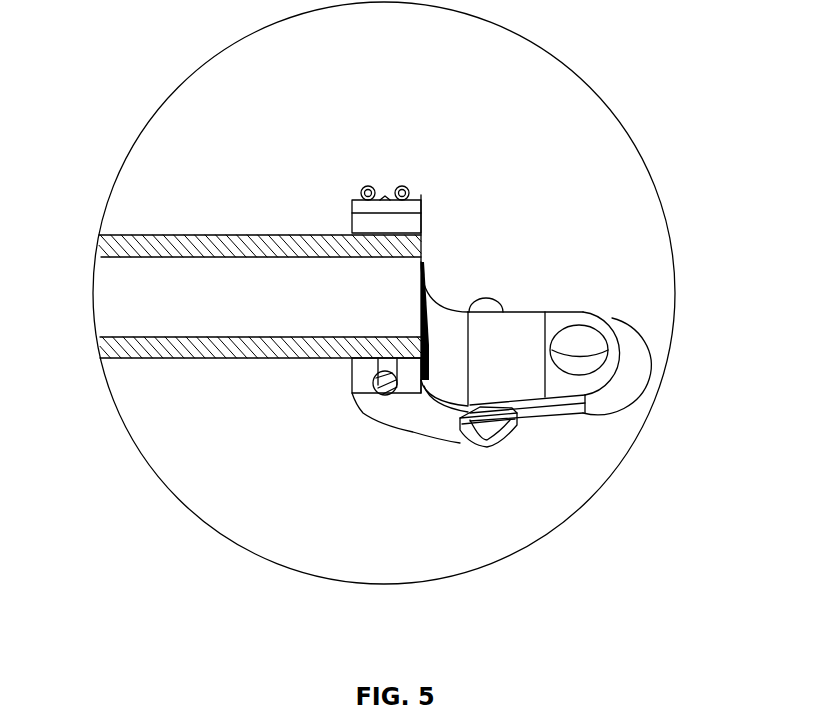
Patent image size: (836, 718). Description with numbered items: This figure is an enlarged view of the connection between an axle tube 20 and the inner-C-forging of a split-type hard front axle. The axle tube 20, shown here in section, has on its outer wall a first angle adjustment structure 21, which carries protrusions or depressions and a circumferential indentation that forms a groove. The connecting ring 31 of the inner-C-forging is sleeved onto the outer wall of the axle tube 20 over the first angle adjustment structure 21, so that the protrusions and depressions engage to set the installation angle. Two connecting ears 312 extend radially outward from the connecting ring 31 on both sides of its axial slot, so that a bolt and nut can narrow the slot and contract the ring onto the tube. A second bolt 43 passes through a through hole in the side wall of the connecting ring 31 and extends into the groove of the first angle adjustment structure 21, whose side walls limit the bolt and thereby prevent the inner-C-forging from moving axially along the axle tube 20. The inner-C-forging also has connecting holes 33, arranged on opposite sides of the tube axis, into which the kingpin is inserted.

The axle tube 20 is at (167, 236).
The first angle adjustment structure 21 is at (353, 234).
The second bolt 43 is at (352, 198).
The connecting ears 312 is at (387, 187).
The connecting ring 31 is at (414, 190).
The connecting holes 33 is at (573, 352).